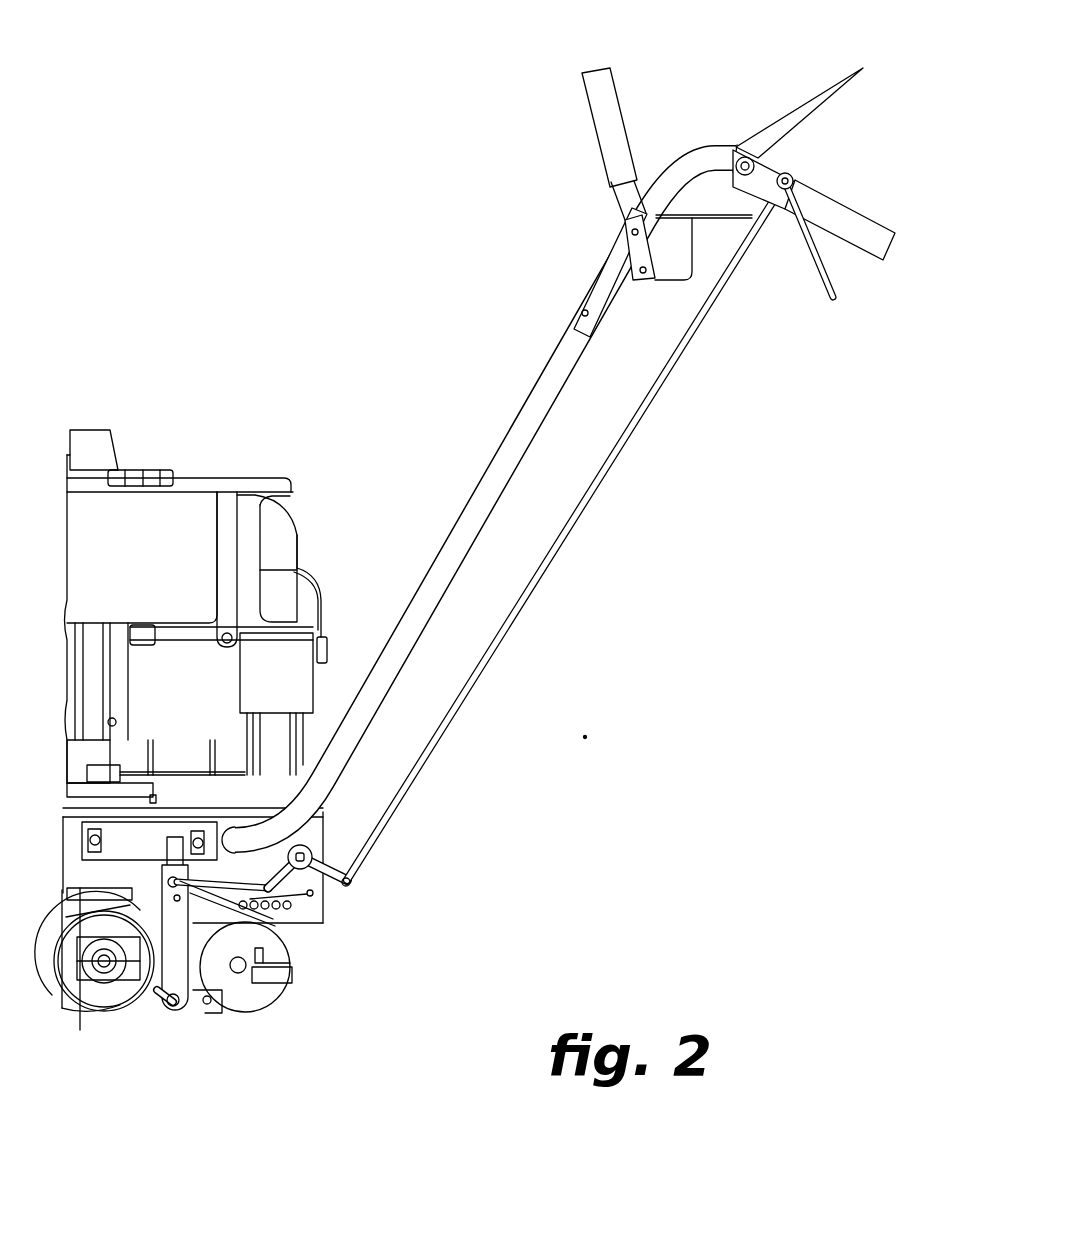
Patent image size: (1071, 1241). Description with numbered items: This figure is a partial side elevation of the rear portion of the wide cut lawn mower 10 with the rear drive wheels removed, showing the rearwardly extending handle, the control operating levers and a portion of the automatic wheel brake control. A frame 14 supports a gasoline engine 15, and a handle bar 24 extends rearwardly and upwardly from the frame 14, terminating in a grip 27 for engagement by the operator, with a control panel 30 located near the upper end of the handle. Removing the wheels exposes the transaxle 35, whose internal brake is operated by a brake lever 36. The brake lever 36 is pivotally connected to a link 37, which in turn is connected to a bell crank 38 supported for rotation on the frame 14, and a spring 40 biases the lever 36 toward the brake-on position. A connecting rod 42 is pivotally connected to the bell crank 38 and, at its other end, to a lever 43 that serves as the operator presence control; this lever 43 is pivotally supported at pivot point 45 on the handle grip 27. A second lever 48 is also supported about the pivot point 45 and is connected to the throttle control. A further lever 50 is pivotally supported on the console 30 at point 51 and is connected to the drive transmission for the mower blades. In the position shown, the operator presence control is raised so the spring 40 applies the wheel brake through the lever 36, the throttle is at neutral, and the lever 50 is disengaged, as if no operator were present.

The wide cut lawn mower 10 is at (254, 367).
The frame 14 is at (227, 823).
The gasoline engine 15 is at (265, 478).
The handle bar 24 is at (530, 432).
The grip 27 is at (855, 208).
The control panel 30 is at (673, 275).
The transaxle 35 is at (248, 1005).
The brake lever 36 is at (178, 1010).
The link 37 is at (218, 878).
The bell crank 38 is at (335, 852).
The spring 40 is at (315, 913).
The connecting rod 42 is at (568, 538).
The lever 43 is at (800, 110).
The pivot point 45 is at (727, 145).
The lever 48 is at (797, 260).
The lever 50 is at (625, 112).
The pivot point 51 is at (620, 257).